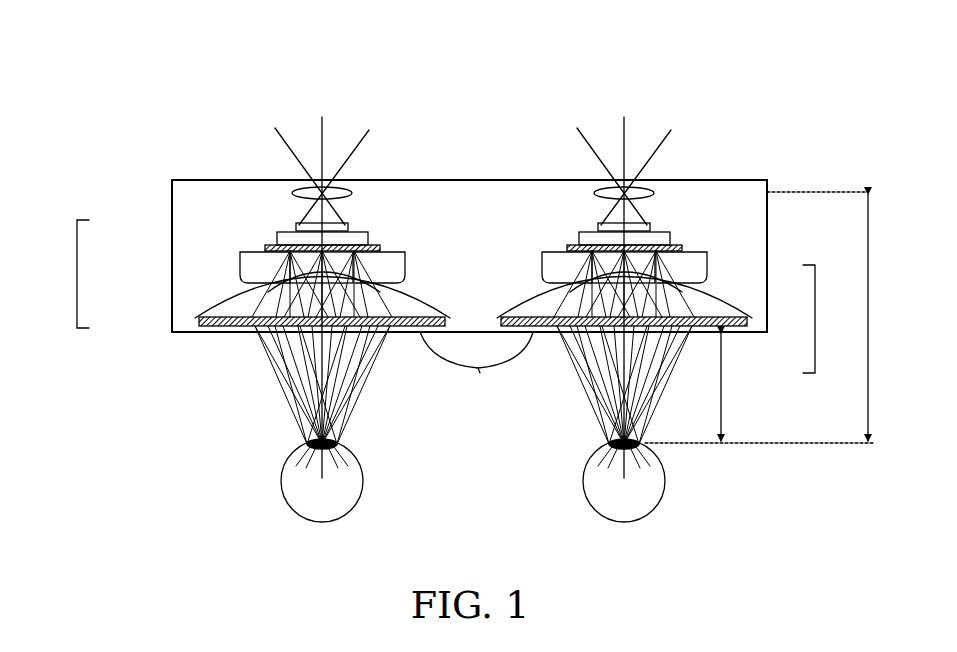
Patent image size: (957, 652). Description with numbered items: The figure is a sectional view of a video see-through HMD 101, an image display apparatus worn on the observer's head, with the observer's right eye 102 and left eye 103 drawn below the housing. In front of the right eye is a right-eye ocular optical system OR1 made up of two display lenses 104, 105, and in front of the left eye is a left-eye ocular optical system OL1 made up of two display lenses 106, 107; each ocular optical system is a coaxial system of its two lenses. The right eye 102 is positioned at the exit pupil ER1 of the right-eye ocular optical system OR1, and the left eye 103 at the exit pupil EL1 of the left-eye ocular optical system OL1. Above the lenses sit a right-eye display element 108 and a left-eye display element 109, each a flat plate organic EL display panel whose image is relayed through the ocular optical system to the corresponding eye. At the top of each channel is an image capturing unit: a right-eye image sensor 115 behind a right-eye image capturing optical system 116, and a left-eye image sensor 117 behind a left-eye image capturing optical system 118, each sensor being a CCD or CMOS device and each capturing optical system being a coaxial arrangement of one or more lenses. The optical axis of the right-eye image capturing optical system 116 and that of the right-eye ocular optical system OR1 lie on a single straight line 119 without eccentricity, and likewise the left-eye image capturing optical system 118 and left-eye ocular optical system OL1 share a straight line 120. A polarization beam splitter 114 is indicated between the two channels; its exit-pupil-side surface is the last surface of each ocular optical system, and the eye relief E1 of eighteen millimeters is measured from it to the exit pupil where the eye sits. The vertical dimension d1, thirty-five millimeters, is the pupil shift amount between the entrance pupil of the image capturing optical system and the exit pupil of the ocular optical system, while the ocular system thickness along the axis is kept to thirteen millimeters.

The video see-through HMD 101 is at (190, 220).
The observer's right eye 102 is at (635, 482).
The observer's left eye 103 is at (333, 482).
The display lens 104 is at (738, 316).
The display lens 105 is at (707, 258).
The display lens 106 is at (205, 310).
The display lens 107 is at (250, 272).
The right-eye display element 108 is at (660, 238).
The left-eye display element 109 is at (357, 237).
The polarization beam splitter 114 is at (476, 367).
The right-eye image sensor 115 is at (650, 222).
The right-eye image capturing optical system 116 is at (608, 180).
The left-eye image sensor 117 is at (297, 225).
The left-eye image capturing optical system 118 is at (308, 185).
The straight line 119 is at (624, 118).
The straight line 120 is at (322, 118).
The exit pupil EL1 is at (374, 447).
The exit pupil ER1 is at (573, 445).
The left-eye ocular optical system OL1 is at (57, 274).
The right-eye ocular optical system OR1 is at (833, 319).
The eye relief E1 is at (739, 387).
The distance d1 is at (773, 317).